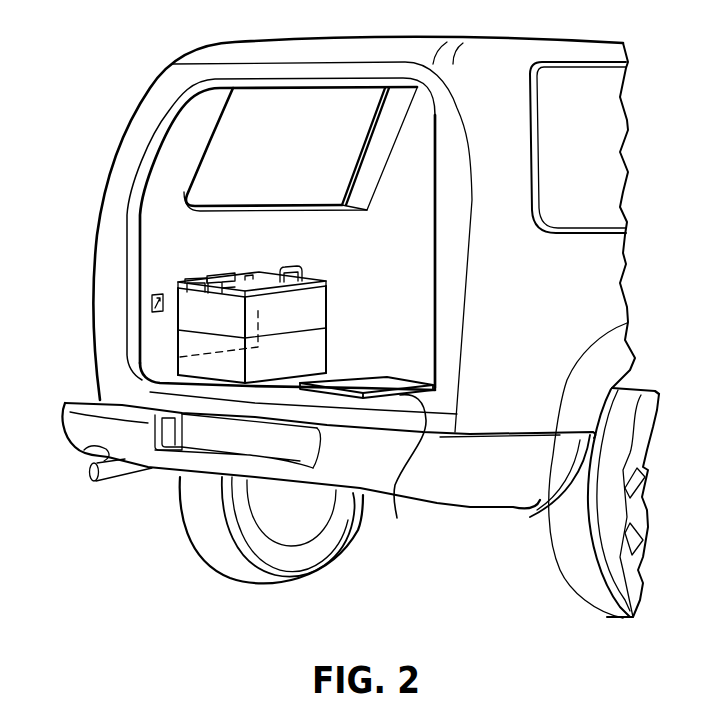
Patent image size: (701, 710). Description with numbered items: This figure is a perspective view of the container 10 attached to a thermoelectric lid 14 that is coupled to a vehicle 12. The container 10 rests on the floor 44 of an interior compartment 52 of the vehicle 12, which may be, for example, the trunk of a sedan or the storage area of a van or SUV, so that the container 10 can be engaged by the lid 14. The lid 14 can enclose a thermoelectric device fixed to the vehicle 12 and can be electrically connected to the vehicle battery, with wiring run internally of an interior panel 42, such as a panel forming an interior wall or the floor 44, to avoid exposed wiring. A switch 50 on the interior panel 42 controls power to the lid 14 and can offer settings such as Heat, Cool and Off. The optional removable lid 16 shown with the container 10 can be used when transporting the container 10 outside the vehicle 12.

The container 10 is at (313, 303).
The vehicle 12 is at (567, 284).
The lid 14 is at (248, 283).
The removable lid 16 is at (390, 377).
The interior panel 42 is at (162, 332).
The floor 44 is at (358, 483).
The switch 50 is at (152, 300).
The interior compartment 52 is at (412, 223).